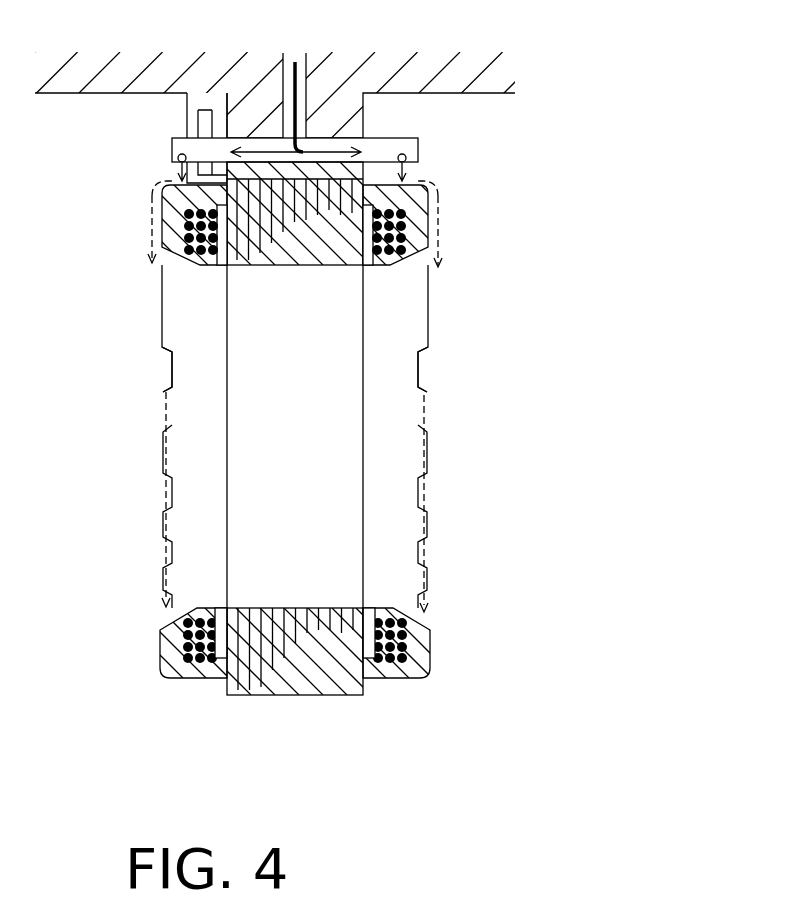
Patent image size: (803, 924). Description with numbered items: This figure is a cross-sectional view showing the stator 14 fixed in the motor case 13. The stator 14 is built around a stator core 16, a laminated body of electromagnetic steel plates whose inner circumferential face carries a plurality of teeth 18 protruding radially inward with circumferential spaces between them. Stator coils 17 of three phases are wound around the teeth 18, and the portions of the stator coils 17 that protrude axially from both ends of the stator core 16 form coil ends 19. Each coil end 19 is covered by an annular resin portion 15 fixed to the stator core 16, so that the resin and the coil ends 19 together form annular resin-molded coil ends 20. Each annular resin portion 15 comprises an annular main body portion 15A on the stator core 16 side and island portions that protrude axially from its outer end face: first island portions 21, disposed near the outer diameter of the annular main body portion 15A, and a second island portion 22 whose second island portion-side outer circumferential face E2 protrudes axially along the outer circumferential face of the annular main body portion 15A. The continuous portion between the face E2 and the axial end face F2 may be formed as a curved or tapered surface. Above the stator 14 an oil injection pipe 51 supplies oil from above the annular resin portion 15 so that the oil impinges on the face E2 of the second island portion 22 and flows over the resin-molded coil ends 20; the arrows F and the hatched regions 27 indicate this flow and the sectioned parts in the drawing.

The motor case 13 is at (454, 82).
The oil injection pipe 51 is at (187, 135).
The second island portion-side outer circumferential face E2 is at (420, 182).
The teeth 18 is at (287, 620).
The stator coils 17 is at (432, 196).
The annular resin portions 15 is at (160, 222).
The second island portion 22 is at (430, 227).
The axial end face F2 is at (160, 215).
The force direction F is at (432, 236).
The stator 14 is at (441, 316).
The wall notch 27 is at (423, 397).
The annular main body portion 15A is at (400, 413).
The first island portions 21 is at (428, 449).
The coil ends 19 is at (403, 672).
The resin-molded coil ends 20 is at (363, 668).
The stator core 16 is at (323, 672).